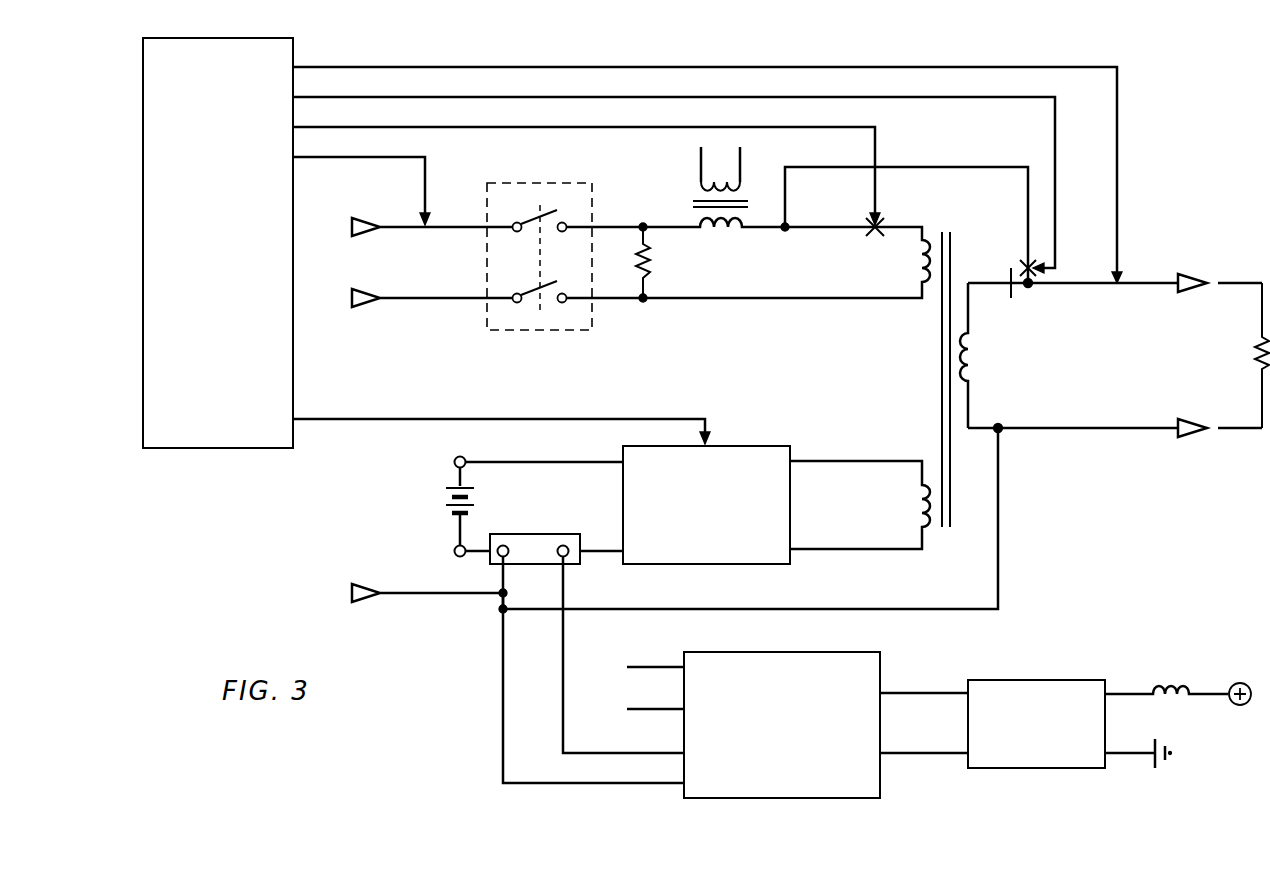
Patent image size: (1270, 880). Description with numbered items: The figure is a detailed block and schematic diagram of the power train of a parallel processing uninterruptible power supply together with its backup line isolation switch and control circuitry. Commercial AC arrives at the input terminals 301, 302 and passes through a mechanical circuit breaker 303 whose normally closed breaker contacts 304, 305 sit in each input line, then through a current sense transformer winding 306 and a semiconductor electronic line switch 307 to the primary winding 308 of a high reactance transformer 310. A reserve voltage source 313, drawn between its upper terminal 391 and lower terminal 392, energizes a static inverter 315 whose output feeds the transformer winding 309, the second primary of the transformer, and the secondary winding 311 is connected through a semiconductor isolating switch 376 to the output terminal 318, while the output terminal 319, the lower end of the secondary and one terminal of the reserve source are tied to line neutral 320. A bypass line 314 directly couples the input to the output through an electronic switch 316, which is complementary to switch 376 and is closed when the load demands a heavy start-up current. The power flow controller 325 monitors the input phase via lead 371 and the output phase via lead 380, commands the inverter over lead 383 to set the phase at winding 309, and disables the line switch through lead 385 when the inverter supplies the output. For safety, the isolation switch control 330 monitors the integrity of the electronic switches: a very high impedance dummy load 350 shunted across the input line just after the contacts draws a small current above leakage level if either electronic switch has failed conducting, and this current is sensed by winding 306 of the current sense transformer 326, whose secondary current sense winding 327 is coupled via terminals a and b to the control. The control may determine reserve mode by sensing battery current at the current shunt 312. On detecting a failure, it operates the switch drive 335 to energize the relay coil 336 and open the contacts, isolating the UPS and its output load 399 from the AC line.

The input terminal 301 is at (366, 225).
The input terminal 302 is at (366, 296).
The mechanical circuit breaker 303 is at (526, 178).
The breaker contact 304 is at (539, 211).
The breaker contact 305 is at (540, 297).
The current sense transformer winding 306 is at (739, 255).
The semiconductor electronic line switch 307 is at (869, 216).
The primary winding 308 is at (904, 261).
The transformer winding 309 is at (909, 504).
The high reactance transformer 310 is at (955, 234).
The secondary winding 311 is at (978, 355).
The current shunt 312 is at (548, 534).
The reserve voltage source 313 is at (442, 497).
The bypass line 314 is at (968, 167).
The static inverter 315 is at (752, 446).
The electronic switch 316 is at (1021, 262).
The output terminal 318 is at (1192, 278).
The output terminal 319 is at (1192, 424).
The line neutral 320 is at (444, 596).
The power flow controller 325 is at (224, 450).
The current sense transformer 326 is at (714, 195).
The current sense winding 327 is at (725, 176).
The isolation switch control 330 is at (726, 652).
The switch drive 335 is at (1011, 680).
The relay coil 336 is at (1193, 680).
The dummy load 350 is at (650, 262).
The lead 371 is at (366, 157).
The semiconductor isolating switch 376 is at (1016, 290).
The lead 380 is at (1119, 166).
The lead 383 is at (376, 419).
The lead 385 is at (583, 124).
The battery positive terminal 391 is at (466, 456).
The battery negative terminal 392 is at (450, 551).
The output load 399 is at (1250, 353).